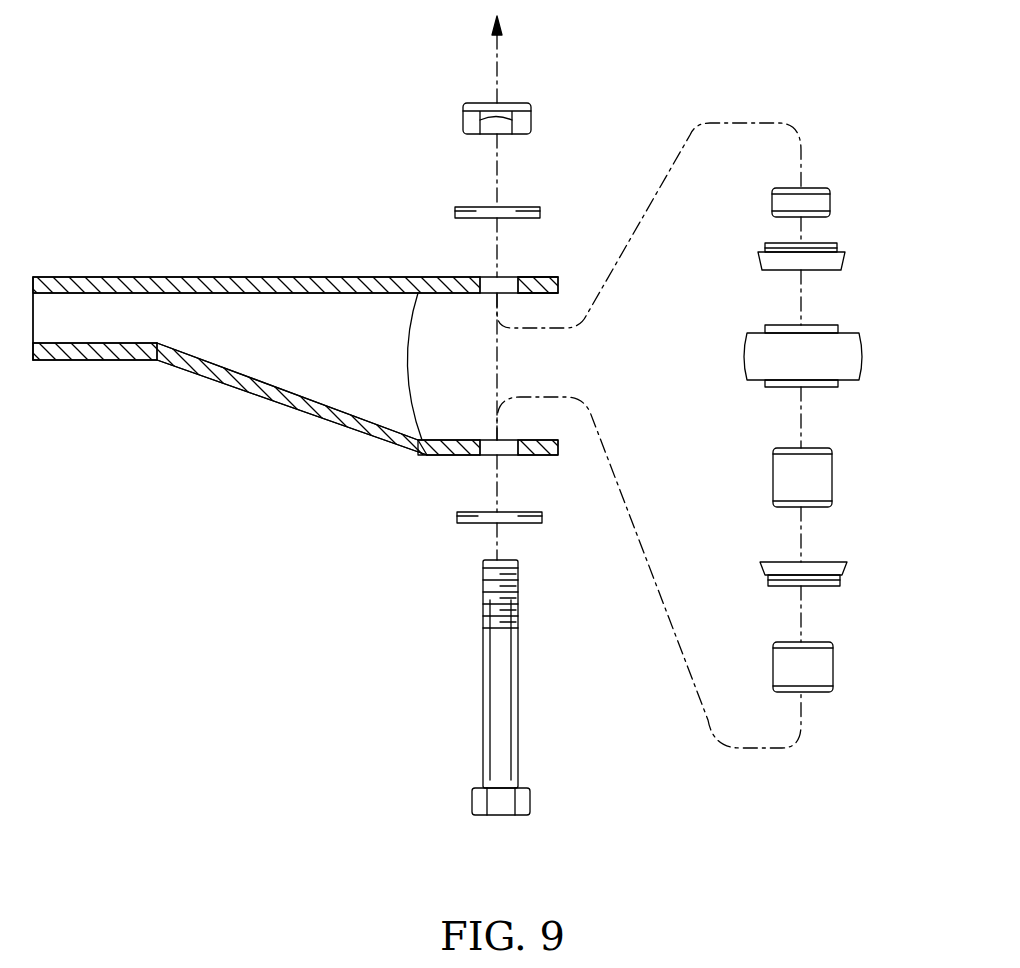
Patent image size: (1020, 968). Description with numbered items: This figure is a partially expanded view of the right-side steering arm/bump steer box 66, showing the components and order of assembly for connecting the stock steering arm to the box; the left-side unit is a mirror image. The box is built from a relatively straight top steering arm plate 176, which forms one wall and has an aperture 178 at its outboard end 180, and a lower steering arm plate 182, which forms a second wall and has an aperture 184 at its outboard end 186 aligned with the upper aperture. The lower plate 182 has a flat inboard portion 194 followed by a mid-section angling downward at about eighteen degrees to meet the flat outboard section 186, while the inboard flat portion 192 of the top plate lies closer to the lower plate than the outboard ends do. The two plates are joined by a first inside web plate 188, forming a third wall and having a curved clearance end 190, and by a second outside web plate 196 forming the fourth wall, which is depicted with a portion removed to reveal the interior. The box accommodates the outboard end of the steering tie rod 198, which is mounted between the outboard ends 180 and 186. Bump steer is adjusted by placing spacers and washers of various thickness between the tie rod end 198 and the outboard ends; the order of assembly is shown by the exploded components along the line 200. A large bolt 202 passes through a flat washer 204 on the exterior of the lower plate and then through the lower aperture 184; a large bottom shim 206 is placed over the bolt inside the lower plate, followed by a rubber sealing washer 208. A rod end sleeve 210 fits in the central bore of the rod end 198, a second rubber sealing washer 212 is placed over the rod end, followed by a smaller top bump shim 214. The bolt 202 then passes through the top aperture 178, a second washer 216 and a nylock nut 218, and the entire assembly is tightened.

The steering arm/bump steer box 66 is at (200, 200).
The top steering arm plate 176 is at (287, 277).
The aperture 178 is at (487, 275).
The outboard end 180 is at (548, 276).
The lower steering arm plate 182 is at (185, 373).
The aperture 184 is at (506, 456).
The outboard end 186 is at (528, 440).
The first inside web plate 188 is at (355, 344).
The curved clearance end 190 is at (401, 354).
The inboard flat portion 192 is at (94, 276).
The flat inboard portion 194 is at (45, 362).
The second outside web plate 196 is at (150, 329).
The steering tie rod end 198 is at (850, 327).
The line 200 is at (733, 123).
The bolt 202 is at (483, 672).
The flat washer 204 is at (530, 523).
The large bottom shim 206 is at (818, 642).
The rubber sealing washer 208 is at (825, 562).
The rod end sleeve 210 is at (818, 448).
The second rubber sealing washer 212 is at (832, 243).
The top bump shim 214 is at (820, 188).
The second washer 216 is at (518, 207).
The nylock nut 218 is at (463, 118).